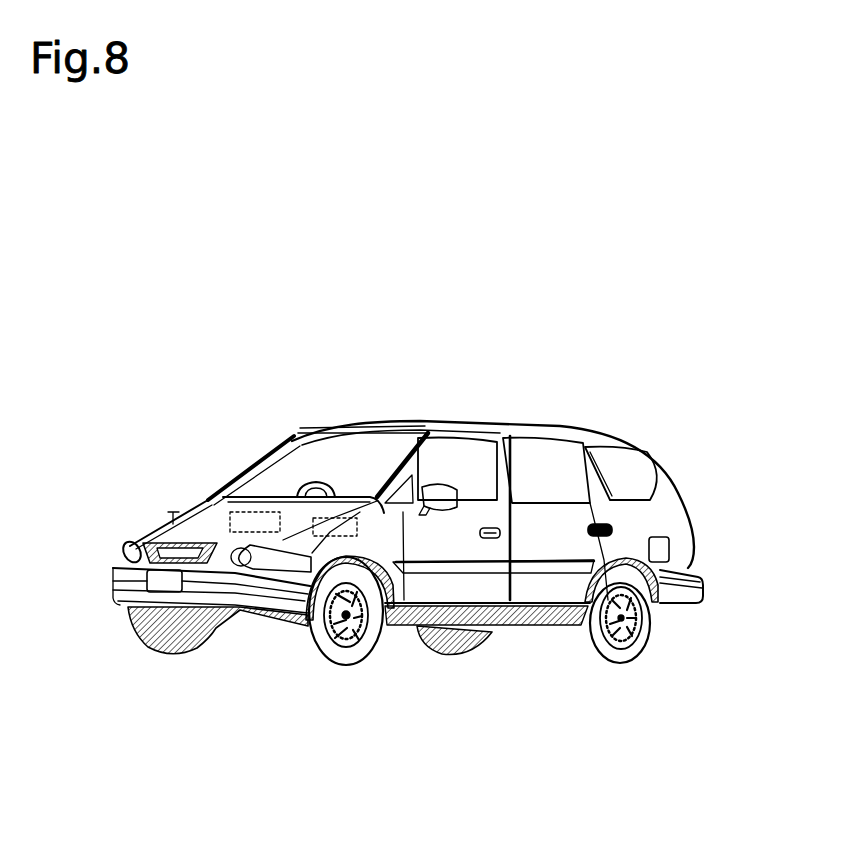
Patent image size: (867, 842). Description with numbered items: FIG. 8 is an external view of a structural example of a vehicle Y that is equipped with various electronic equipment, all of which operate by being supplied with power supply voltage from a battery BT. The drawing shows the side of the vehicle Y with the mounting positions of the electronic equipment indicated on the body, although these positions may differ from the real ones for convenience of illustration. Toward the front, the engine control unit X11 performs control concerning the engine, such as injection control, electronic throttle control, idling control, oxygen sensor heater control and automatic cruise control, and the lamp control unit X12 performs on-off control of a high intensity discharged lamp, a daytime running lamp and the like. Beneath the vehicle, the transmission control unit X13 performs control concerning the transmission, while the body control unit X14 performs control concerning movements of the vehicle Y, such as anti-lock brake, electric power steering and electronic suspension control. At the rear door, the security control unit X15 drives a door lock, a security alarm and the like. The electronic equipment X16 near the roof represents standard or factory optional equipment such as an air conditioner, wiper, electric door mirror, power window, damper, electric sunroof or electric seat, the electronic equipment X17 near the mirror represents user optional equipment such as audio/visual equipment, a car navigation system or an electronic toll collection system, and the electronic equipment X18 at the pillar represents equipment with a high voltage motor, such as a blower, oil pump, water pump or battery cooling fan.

The vehicle Y is at (146, 362).
The engine control unit X11 is at (172, 513).
The lamp control unit X12 is at (128, 546).
The transmission control unit X13 is at (275, 632).
The body control unit X14 is at (548, 632).
The security control unit X15 is at (612, 523).
The electronic equipment (standard or factory optional equipment) X16 is at (556, 448).
The electronic equipment (user optional equipment) X17 is at (342, 493).
The electronic equipment equipped with a high voltage motor X18 is at (233, 515).
The battery BT is at (352, 524).